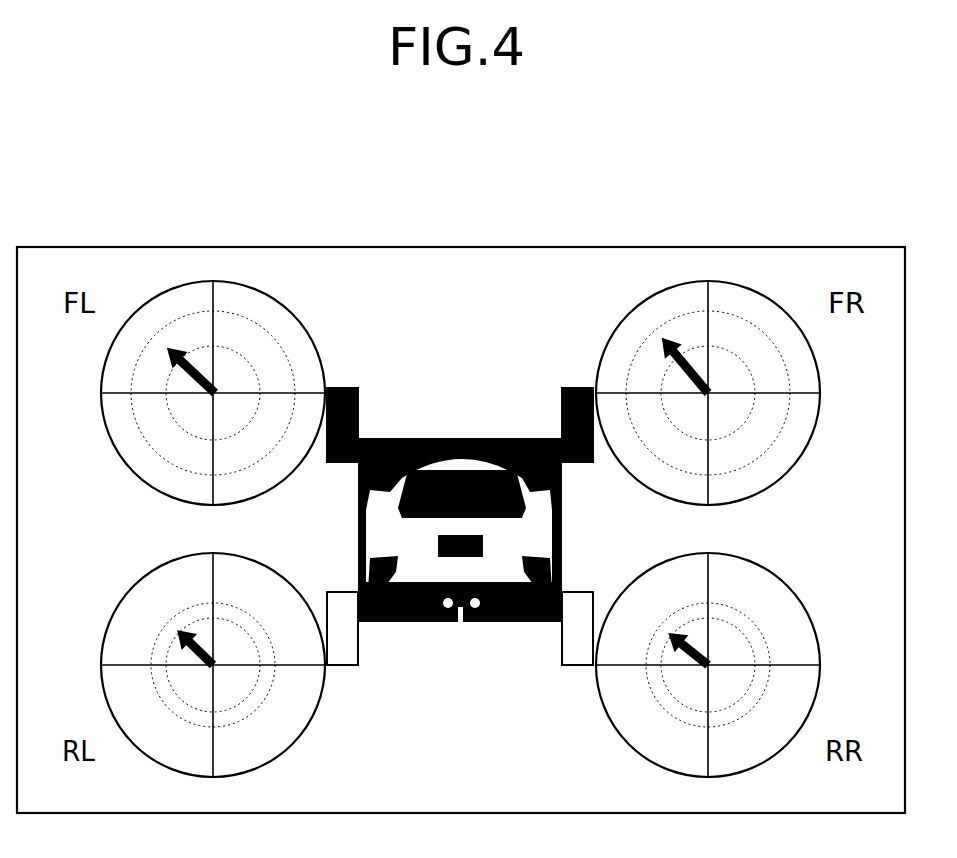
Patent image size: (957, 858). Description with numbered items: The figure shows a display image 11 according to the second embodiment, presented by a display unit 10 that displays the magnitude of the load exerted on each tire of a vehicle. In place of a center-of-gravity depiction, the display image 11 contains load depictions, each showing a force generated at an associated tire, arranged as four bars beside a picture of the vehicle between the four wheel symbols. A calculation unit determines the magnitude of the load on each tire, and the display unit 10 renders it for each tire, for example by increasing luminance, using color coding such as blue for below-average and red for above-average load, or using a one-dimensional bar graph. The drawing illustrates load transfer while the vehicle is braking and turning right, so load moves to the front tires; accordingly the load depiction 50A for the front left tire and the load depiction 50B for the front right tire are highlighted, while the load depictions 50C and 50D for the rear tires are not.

The display unit 10 is at (461, 497).
The display image 11 is at (475, 248).
The load depiction 50A is at (358, 386).
The load depiction 50B is at (562, 388).
The load depiction 50C is at (358, 666).
The load depiction 50D is at (562, 666).